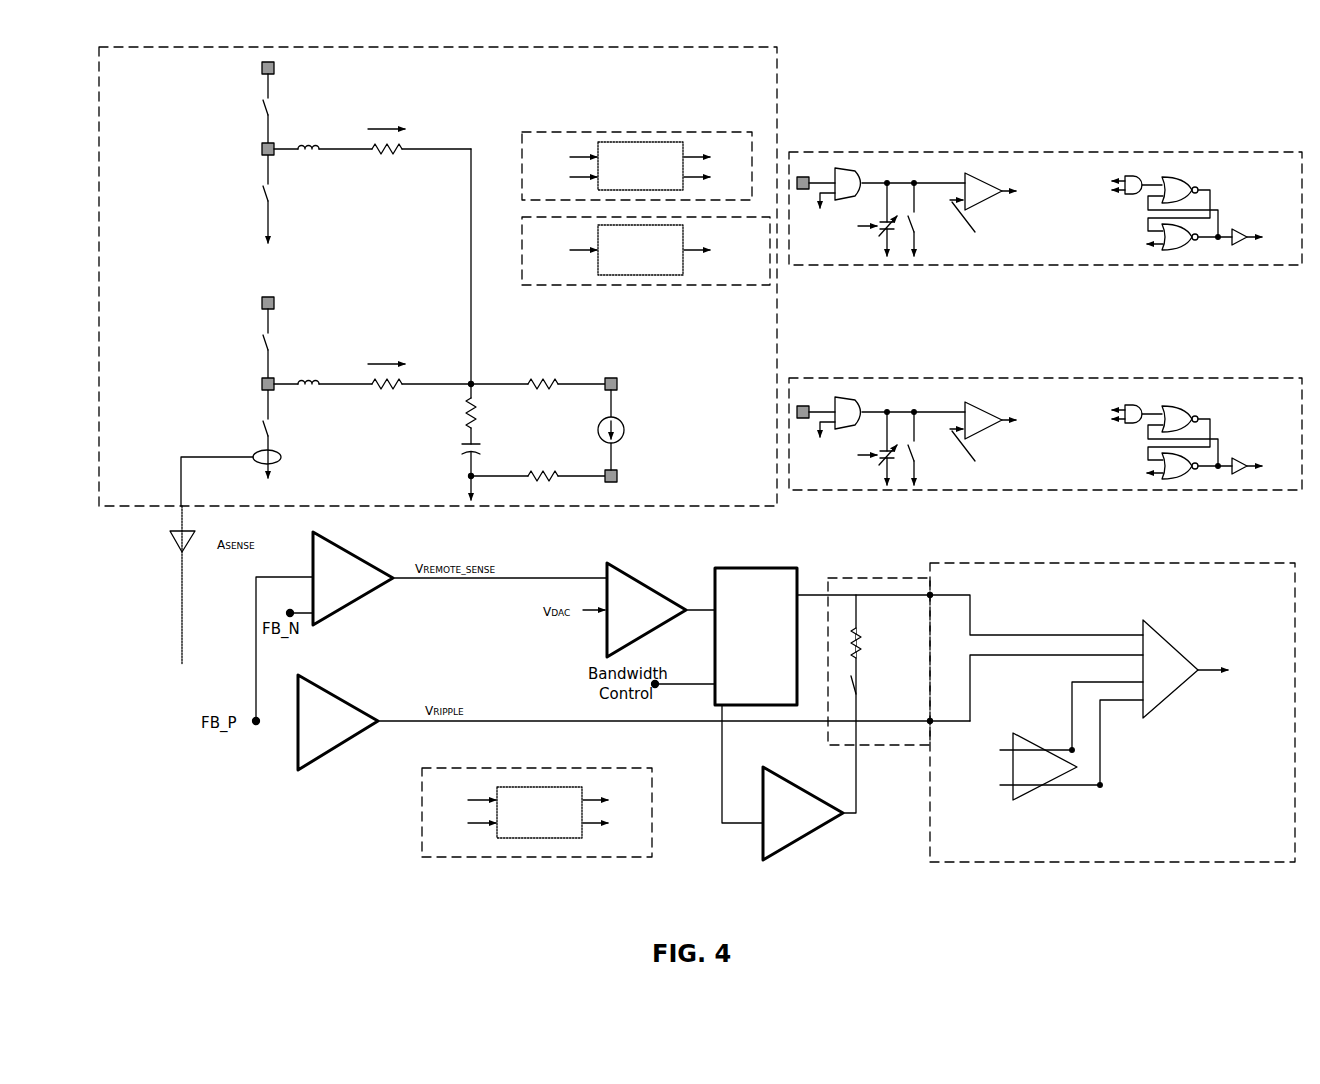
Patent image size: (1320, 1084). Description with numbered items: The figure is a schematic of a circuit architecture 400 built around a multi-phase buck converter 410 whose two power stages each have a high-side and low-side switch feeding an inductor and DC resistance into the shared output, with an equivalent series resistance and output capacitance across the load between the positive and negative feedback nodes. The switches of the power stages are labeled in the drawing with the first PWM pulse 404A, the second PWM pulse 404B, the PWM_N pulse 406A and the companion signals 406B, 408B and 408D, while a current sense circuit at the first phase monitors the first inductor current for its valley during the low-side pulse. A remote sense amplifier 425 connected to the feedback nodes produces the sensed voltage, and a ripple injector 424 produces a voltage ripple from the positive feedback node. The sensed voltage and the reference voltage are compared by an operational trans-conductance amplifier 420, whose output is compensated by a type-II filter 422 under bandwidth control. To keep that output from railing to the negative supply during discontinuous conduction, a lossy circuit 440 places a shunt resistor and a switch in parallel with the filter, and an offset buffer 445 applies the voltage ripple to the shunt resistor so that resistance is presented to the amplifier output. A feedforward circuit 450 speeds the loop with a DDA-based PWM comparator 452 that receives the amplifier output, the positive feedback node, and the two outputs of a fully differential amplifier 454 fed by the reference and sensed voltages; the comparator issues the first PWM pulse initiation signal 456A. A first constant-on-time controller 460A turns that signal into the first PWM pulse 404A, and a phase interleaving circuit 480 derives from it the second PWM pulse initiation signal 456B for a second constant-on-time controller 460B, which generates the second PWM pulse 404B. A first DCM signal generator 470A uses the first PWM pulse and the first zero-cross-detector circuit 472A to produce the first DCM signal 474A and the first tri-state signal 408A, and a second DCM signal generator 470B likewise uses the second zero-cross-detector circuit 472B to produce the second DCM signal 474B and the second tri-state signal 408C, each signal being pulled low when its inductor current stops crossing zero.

The circuit architecture 400 is at (1212, 117).
The buck converter 410 is at (777, 102).
The first PWM pulse 404A is at (258, 342).
The second PWM pulse 404B is at (258, 107).
The PWM_N pulse 406A is at (971, 432).
The comparator of second phase 406B is at (971, 203).
The first tri-state signal 408A is at (617, 824).
The low-side switch 408B is at (258, 426).
The second tri-state signal 408C is at (719, 177).
The low-side switch 408D is at (258, 191).
The operational trans-conductance amplifier 420 is at (625, 575).
The type-II filter 422 is at (733, 566).
The ripple injector 424 is at (320, 688).
The remote sense amplifier 425 is at (372, 561).
The lossy circuit 440 is at (875, 578).
The offset buffer 445 is at (773, 769).
The feedforward circuit 450 is at (1150, 563).
The DDA-based PWM comparator 452 is at (1170, 651).
The fully differential amplifier 454 is at (1020, 741).
The first PWM pulse initiation signal 456A is at (1099, 422).
The second PWM pulse initiation signal 456B is at (1099, 193).
The first constant-on-time controller 460A is at (983, 378).
The second constant-on-time controller 460B is at (983, 152).
The first DCM signal generator 470A is at (468, 768).
The second DCM signal generator 470B is at (628, 131).
The first zero-cross-detector circuit 472A is at (459, 824).
The second zero-cross-detector circuit 472B is at (563, 177).
The first DCM signal 474A is at (864, 682).
The second DCM signal 474B is at (719, 157).
The phase interleaving circuit 480 is at (633, 286).